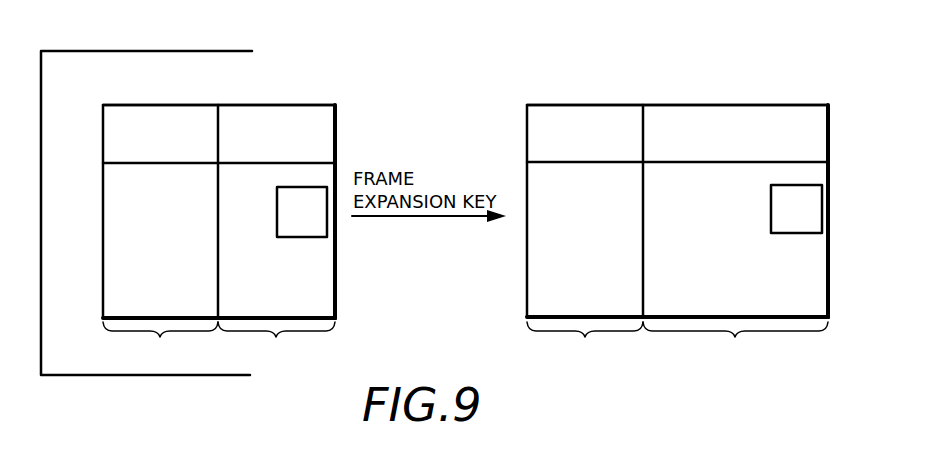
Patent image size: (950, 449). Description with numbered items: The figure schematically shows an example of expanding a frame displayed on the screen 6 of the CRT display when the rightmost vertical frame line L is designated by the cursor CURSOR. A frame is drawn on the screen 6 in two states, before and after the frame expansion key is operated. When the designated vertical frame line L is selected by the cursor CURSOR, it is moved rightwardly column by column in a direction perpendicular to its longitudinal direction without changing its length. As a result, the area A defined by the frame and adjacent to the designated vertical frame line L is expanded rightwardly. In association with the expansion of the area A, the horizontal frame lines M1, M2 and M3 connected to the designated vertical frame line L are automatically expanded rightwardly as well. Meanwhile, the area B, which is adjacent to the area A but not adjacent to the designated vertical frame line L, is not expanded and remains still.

The screen 6 is at (112, 53).
The horizontal frame line M1 is at (270, 104).
The horizontal frame line M2 is at (260, 162).
The horizontal frame line M3 is at (262, 318).
The cursor CURSOR is at (318, 203).
The rightmost vertical frame line L is at (342, 253).
The area A is at (523, 344).
The area B is at (373, 344).